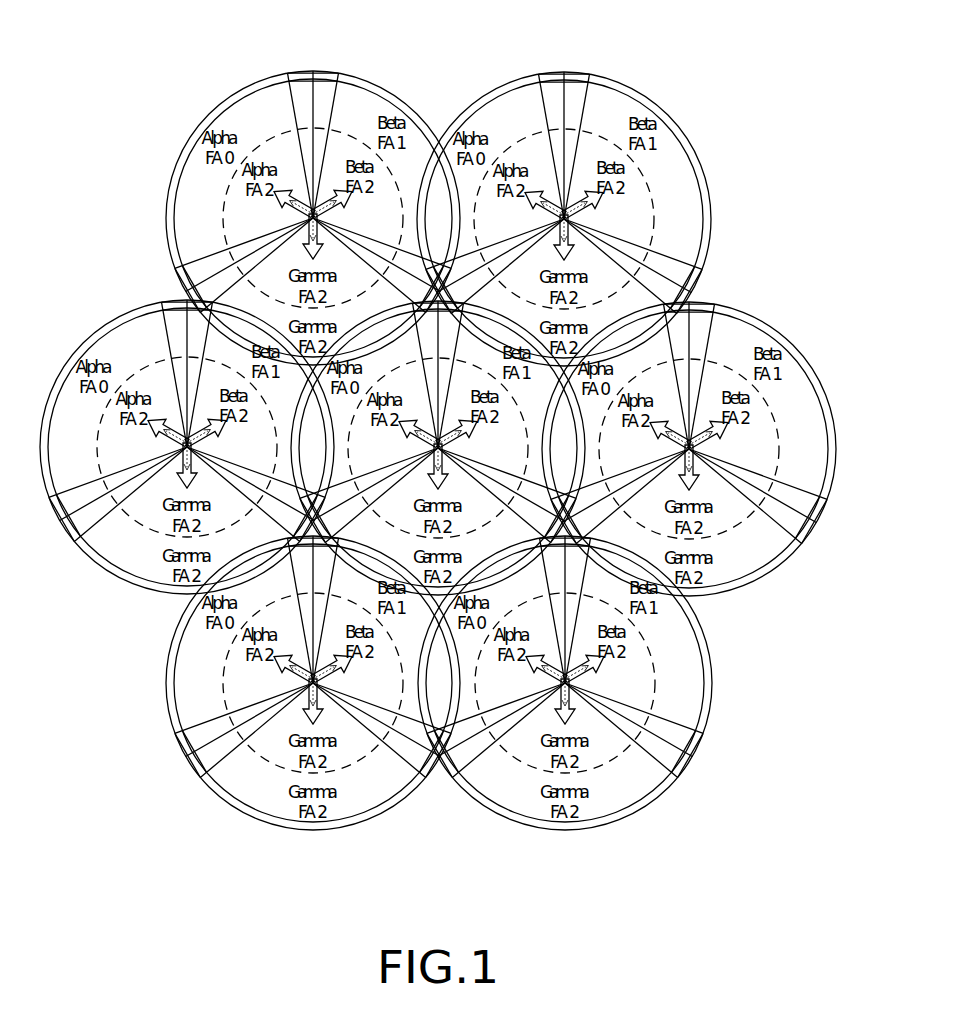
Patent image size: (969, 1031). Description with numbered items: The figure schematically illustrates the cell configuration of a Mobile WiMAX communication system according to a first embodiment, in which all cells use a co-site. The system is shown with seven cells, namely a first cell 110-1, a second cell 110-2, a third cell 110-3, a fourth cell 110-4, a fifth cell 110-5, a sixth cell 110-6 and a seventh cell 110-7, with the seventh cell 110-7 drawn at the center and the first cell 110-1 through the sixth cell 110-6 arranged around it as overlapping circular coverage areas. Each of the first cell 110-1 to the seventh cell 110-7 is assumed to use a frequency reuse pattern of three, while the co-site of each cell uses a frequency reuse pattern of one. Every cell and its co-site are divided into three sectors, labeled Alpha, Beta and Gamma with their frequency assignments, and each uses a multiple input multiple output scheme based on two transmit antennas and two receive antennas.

The cell #1 110-1 is at (228, 100).
The cell #2 110-2 is at (645, 93).
The cell #3 110-3 is at (757, 317).
The cell #4 110-4 is at (645, 805).
The cell #5 110-5 is at (233, 805).
The cell #6 110-6 is at (118, 317).
The cell #7 110-7 is at (395, 287).